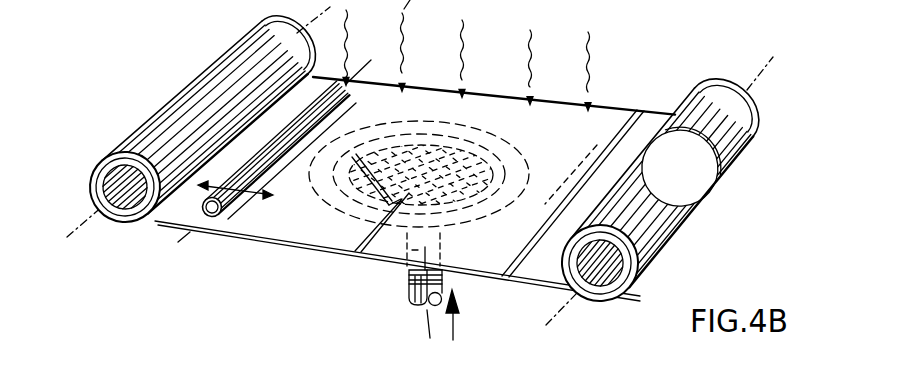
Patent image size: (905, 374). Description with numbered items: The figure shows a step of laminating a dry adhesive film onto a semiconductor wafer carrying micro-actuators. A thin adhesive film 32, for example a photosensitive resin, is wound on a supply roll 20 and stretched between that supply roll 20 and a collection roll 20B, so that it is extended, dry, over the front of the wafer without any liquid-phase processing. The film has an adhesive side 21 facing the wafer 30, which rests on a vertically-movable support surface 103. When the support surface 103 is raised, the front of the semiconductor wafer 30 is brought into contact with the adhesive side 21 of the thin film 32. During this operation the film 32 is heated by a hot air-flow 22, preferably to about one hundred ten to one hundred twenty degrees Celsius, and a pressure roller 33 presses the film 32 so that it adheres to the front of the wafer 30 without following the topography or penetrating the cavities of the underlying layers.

The supply roll 20 is at (170, 108).
The collection roll 20B is at (741, 158).
The adhesive side 21 is at (275, 250).
The hot air-flow 22 is at (612, 40).
The semiconductor wafer 30 is at (414, 158).
The thin adhesive film 32 is at (582, 158).
The pressure roller 33 is at (258, 217).
The support surface 103 is at (496, 142).